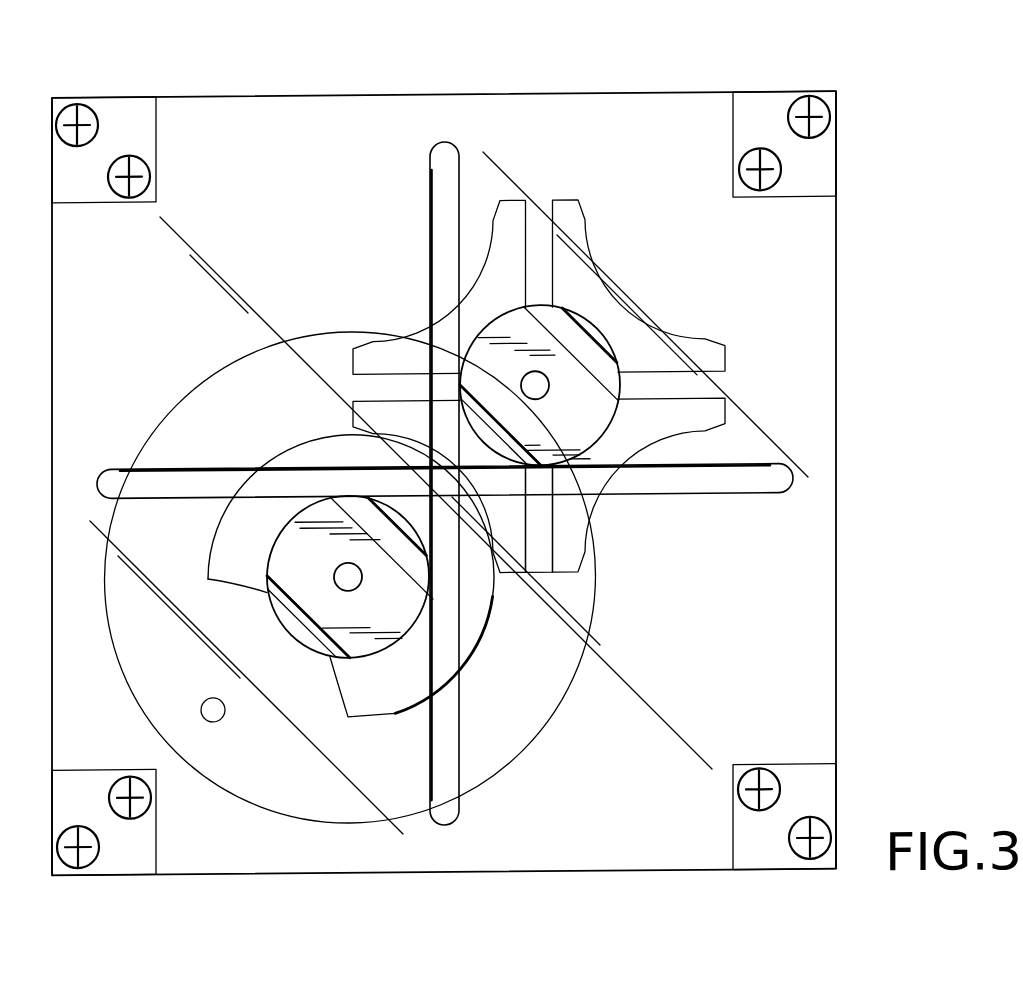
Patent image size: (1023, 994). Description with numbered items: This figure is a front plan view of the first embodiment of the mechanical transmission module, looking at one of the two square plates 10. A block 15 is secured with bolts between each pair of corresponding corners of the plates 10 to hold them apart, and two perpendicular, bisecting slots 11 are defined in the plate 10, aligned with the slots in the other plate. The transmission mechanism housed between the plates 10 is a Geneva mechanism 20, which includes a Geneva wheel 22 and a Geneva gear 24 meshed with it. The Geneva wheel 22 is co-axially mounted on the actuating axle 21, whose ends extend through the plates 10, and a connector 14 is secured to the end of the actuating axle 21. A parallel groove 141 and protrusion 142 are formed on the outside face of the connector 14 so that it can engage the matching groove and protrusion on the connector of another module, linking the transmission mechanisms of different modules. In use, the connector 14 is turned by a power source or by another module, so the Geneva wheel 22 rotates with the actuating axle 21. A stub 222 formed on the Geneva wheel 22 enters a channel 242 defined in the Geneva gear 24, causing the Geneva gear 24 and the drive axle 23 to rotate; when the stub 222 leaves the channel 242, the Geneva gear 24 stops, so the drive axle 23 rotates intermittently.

The plate 10 is at (804, 281).
The slot 11 is at (771, 478).
The connector 14 is at (390, 632).
The groove 141 is at (408, 551).
The protrusion 142 is at (313, 622).
The block 15 is at (820, 170).
The Geneva mechanism 20 is at (587, 156).
The actuating axle 21 is at (343, 574).
The Geneva wheel 22 is at (530, 736).
The stub 222 is at (223, 717).
The drive axle 23 is at (541, 400).
The Geneva gear 24 is at (365, 356).
The channel 242 is at (537, 541).